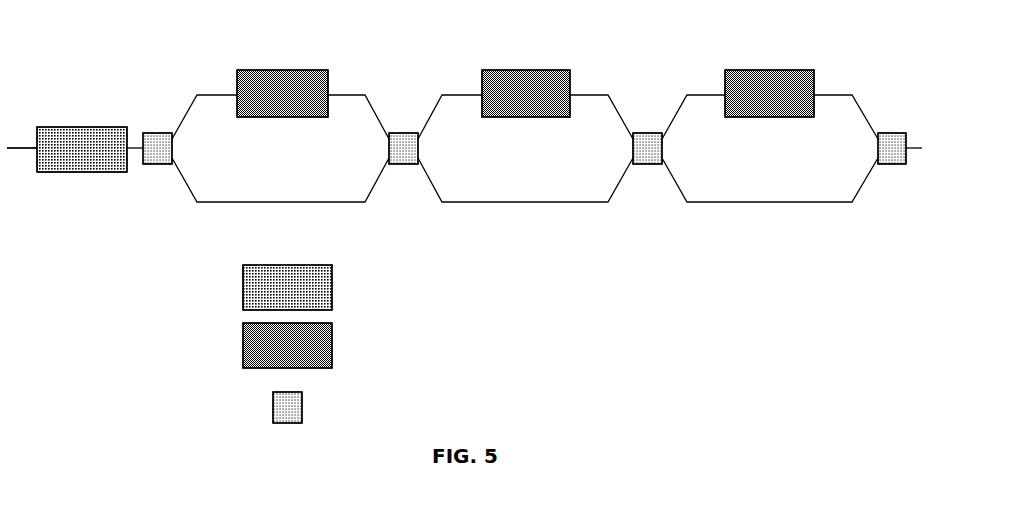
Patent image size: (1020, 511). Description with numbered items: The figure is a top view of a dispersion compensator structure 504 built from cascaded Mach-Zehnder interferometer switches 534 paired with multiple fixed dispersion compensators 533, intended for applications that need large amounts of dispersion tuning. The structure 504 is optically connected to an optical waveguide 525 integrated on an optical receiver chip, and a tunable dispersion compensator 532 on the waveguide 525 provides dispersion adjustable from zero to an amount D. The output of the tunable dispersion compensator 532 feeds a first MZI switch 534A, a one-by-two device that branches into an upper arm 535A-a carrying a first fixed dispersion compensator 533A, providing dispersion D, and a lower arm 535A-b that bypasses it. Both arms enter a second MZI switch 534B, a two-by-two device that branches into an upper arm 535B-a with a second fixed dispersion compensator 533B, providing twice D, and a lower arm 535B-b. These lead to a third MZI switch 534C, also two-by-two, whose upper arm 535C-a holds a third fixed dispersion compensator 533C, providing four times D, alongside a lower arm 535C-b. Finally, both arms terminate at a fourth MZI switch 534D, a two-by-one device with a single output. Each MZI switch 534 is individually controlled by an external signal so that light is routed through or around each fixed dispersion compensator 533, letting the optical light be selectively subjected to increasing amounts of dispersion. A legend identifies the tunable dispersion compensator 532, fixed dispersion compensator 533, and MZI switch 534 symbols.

The dispersion compensator structure 504 is at (110, 38).
The optical waveguide 525 is at (33, 148).
The tunable dispersion compensator 532 is at (322, 218).
The fixed dispersion compensators 533 is at (415, 345).
The first fixed dispersion compensator 533A is at (282, 93).
The second fixed dispersion compensator 533B is at (526, 93).
The third fixed dispersion compensator 533C is at (769, 93).
The MZI switches 534 is at (275, 412).
The first MZI switch 534A is at (158, 158).
The second MZI switch 534B is at (404, 153).
The third MZI switch 534C is at (646, 157).
The fourth MZI switch 534D is at (892, 157).
The upper arm 535A-a is at (217, 93).
The lower arm 535A-b is at (240, 203).
The upper arm 535B-a is at (465, 93).
The lower arm 535B-b is at (512, 203).
The upper arm 535C-a is at (711, 93).
The lower arm 535C-b is at (776, 205).